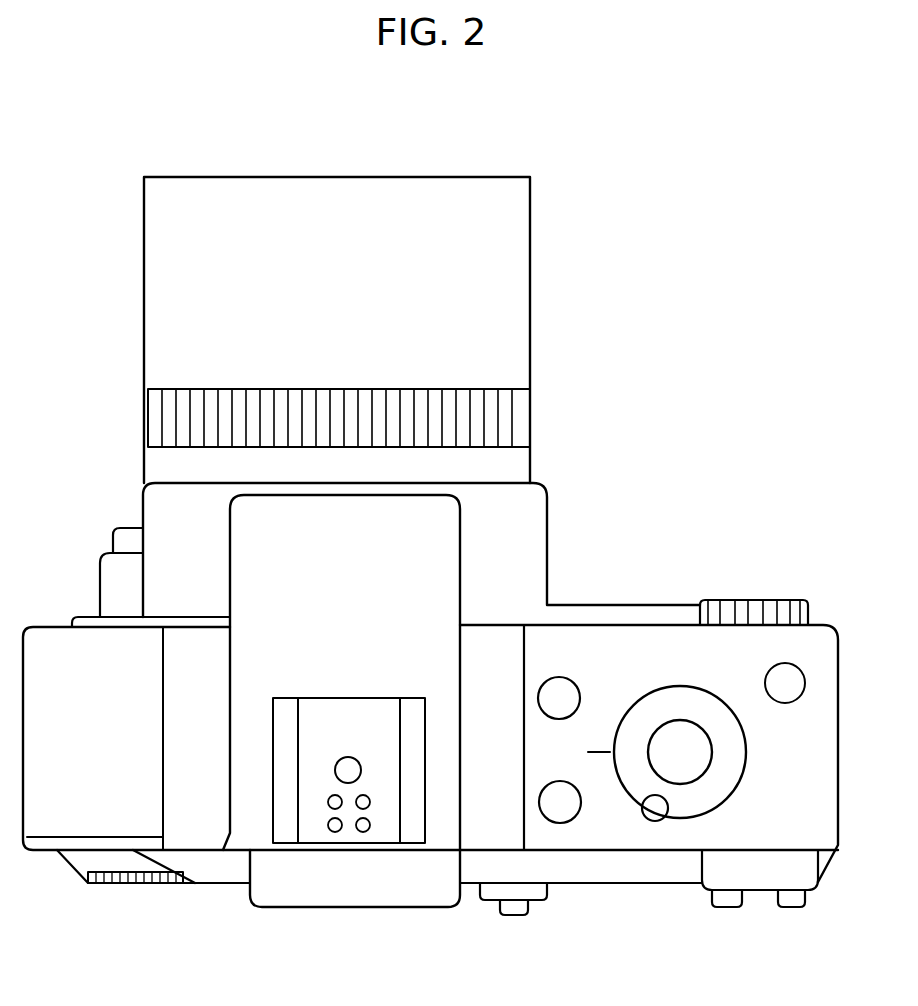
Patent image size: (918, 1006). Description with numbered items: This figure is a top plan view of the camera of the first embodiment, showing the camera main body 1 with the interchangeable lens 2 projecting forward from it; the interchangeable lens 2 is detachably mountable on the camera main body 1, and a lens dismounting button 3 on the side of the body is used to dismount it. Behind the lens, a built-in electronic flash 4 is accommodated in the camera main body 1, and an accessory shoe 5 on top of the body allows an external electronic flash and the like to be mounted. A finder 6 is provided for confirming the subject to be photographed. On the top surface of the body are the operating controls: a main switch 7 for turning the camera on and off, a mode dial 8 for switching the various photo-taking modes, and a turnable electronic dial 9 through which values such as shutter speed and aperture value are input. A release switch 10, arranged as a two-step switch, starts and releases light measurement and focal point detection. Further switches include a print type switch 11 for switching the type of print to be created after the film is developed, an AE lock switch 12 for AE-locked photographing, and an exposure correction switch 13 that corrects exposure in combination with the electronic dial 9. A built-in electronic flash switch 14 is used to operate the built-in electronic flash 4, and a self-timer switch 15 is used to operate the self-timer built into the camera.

The camera main body 1 is at (822, 720).
The interchangeable lens 2 is at (520, 296).
The lens dismounting button 3 is at (113, 530).
The built-in electronic flash 4 is at (442, 550).
The accessory shoe 5 is at (283, 838).
The finder 6 is at (348, 897).
The main switch 7 is at (720, 787).
The mode dial 8 is at (138, 884).
The electronic dial 9 is at (752, 605).
The release switch 10 is at (703, 750).
The print type switch 11 is at (513, 912).
The AE lock switch 12 is at (727, 905).
The exposure correction switch 13 is at (792, 905).
The built-in electronic flash switch 14 is at (558, 686).
The self-timer switch 15 is at (567, 812).